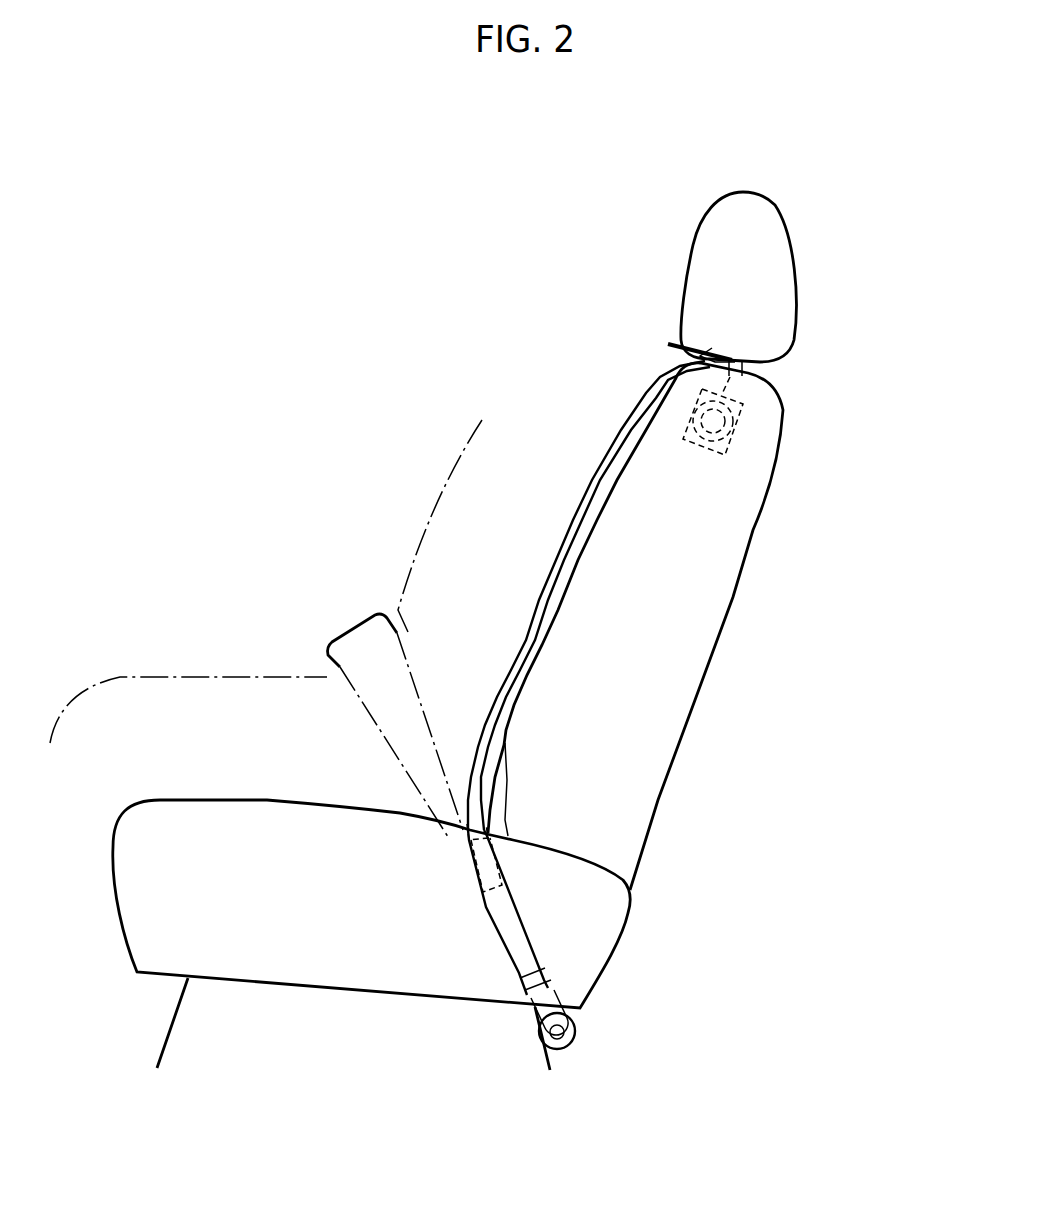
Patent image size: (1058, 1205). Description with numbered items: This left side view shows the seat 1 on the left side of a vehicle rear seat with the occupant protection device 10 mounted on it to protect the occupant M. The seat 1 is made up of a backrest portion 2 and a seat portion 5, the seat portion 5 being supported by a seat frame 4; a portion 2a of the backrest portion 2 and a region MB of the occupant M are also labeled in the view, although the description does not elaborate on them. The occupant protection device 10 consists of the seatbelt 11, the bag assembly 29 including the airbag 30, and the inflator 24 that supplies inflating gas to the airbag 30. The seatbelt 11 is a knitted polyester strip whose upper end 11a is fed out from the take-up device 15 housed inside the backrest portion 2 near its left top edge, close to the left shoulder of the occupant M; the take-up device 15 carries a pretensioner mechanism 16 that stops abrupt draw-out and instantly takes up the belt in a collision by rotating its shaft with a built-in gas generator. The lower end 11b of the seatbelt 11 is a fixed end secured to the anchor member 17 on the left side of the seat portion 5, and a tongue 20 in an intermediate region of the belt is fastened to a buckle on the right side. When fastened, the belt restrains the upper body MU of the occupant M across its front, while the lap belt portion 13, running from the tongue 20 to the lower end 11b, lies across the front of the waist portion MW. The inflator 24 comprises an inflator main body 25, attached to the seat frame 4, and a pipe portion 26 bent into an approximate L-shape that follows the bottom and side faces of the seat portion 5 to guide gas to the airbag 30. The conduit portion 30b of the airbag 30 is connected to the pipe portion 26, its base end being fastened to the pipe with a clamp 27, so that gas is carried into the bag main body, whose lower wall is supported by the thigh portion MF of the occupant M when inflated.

The seat 1 is at (426, 675).
The backrest portion 2 is at (660, 490).
The side surface of seat back 2a is at (460, 453).
The seat frame 4 is at (172, 1023).
The seat portion 5 is at (233, 973).
The occupant protection device 10 is at (478, 976).
The seatbelt 11 is at (678, 536).
The upper end 11a is at (743, 332).
The lower end 11b is at (503, 887).
The lap belt portion 13 is at (470, 840).
The take-up device 15 is at (740, 418).
The pretensioner mechanism 16 is at (733, 437).
The anchor member 17 is at (634, 871).
The tongue 20 is at (675, 340).
The inflator 24 is at (662, 1022).
The inflator main body 25 is at (577, 1047).
The pipe portion 26 is at (557, 1027).
The clamp 27 is at (527, 992).
The bag assembly 29 is at (573, 558).
The airbag 30 is at (502, 759).
The conduit portion 30b is at (503, 907).
The occupant M is at (528, 513).
The upper body MU is at (410, 493).
The waist portion MW is at (457, 720).
The rear portion of airbag module MB is at (397, 603).
The thigh portion MF is at (208, 703).